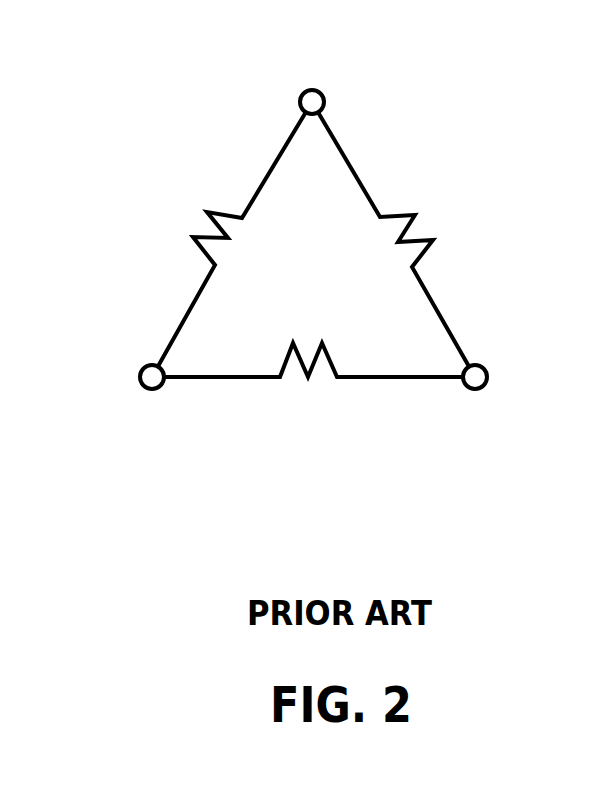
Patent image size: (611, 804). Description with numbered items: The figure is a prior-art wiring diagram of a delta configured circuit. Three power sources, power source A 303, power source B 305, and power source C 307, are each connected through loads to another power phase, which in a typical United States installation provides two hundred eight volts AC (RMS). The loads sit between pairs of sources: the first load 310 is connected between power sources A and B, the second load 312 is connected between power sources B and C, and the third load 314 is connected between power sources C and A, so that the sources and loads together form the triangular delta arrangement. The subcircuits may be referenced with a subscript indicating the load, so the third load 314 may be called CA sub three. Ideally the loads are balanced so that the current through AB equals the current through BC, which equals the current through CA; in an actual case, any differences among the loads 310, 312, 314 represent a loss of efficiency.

The power source A 303 is at (355, 84).
The power source B 305 is at (158, 420).
The power source C 307 is at (515, 358).
The load 1 310 is at (175, 215).
The load 2 312 is at (310, 415).
The load 3 314 is at (450, 215).